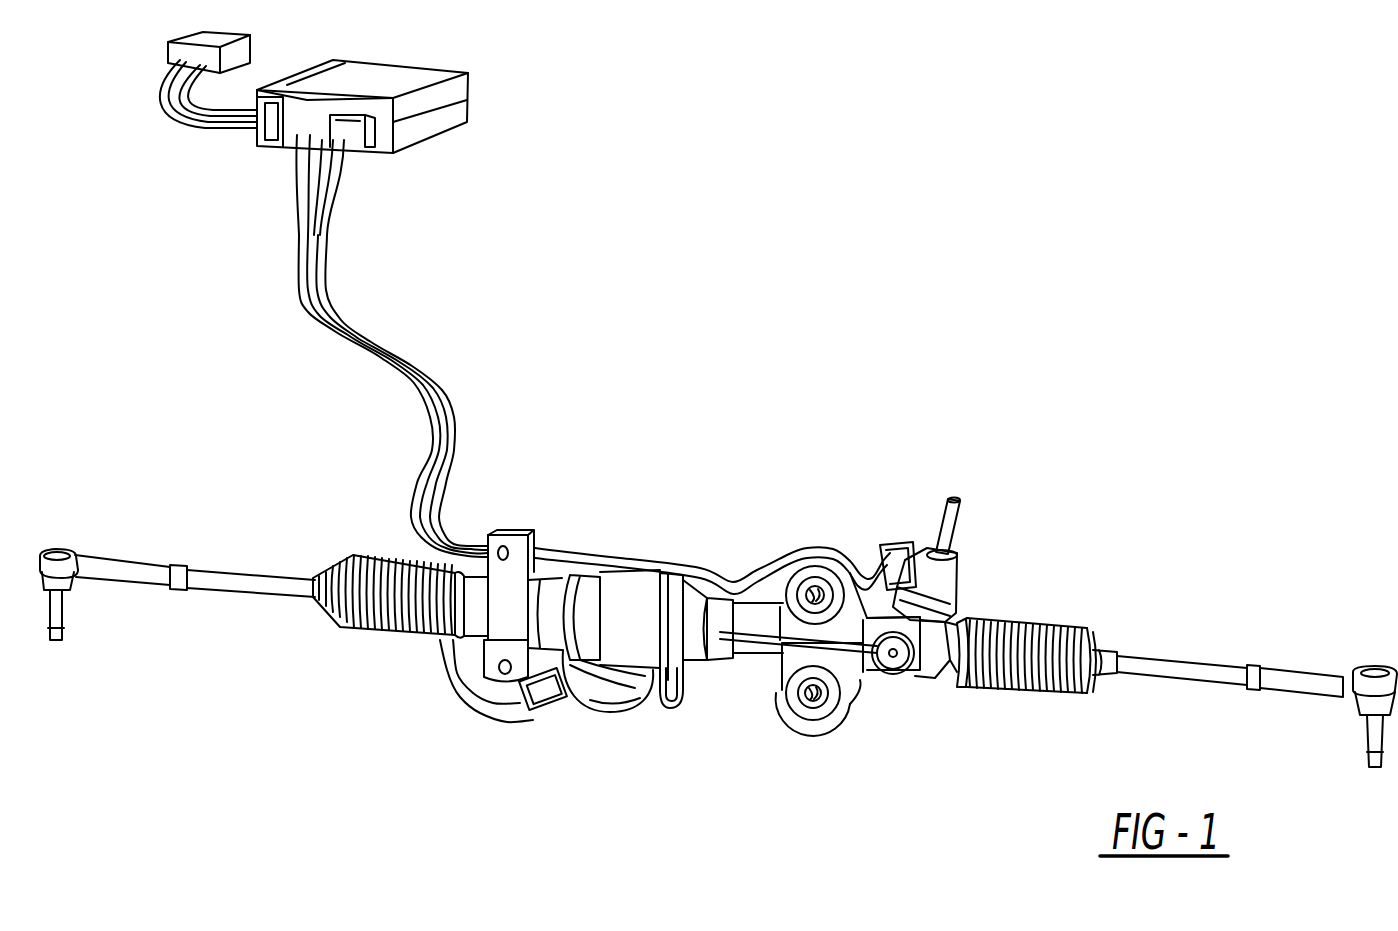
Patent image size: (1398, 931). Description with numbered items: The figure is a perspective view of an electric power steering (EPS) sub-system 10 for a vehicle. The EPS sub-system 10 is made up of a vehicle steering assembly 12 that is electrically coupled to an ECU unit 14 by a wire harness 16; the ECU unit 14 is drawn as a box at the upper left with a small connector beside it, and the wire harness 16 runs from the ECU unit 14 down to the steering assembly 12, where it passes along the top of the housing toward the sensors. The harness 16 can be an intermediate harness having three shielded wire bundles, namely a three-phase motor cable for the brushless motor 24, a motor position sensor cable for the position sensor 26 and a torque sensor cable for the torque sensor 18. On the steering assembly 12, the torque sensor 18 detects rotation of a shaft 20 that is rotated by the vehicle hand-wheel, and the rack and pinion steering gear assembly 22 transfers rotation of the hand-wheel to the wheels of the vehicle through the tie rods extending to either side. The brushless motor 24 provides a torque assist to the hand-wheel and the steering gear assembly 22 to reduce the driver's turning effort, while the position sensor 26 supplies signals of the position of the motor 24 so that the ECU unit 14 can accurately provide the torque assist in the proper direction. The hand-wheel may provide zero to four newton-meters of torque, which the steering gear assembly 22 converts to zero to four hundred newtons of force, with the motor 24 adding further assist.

The EPS sub-system 10 is at (805, 259).
The vehicle steering assembly 12 is at (656, 447).
The ECU unit 14 is at (413, 150).
The wire harness 16 is at (338, 337).
The torque sensor 18 is at (900, 540).
The shaft 20 is at (941, 530).
The rack and pinion steering gear assembly 22 is at (837, 713).
The brushless motor 24 is at (490, 713).
The position sensor 26 is at (537, 687).